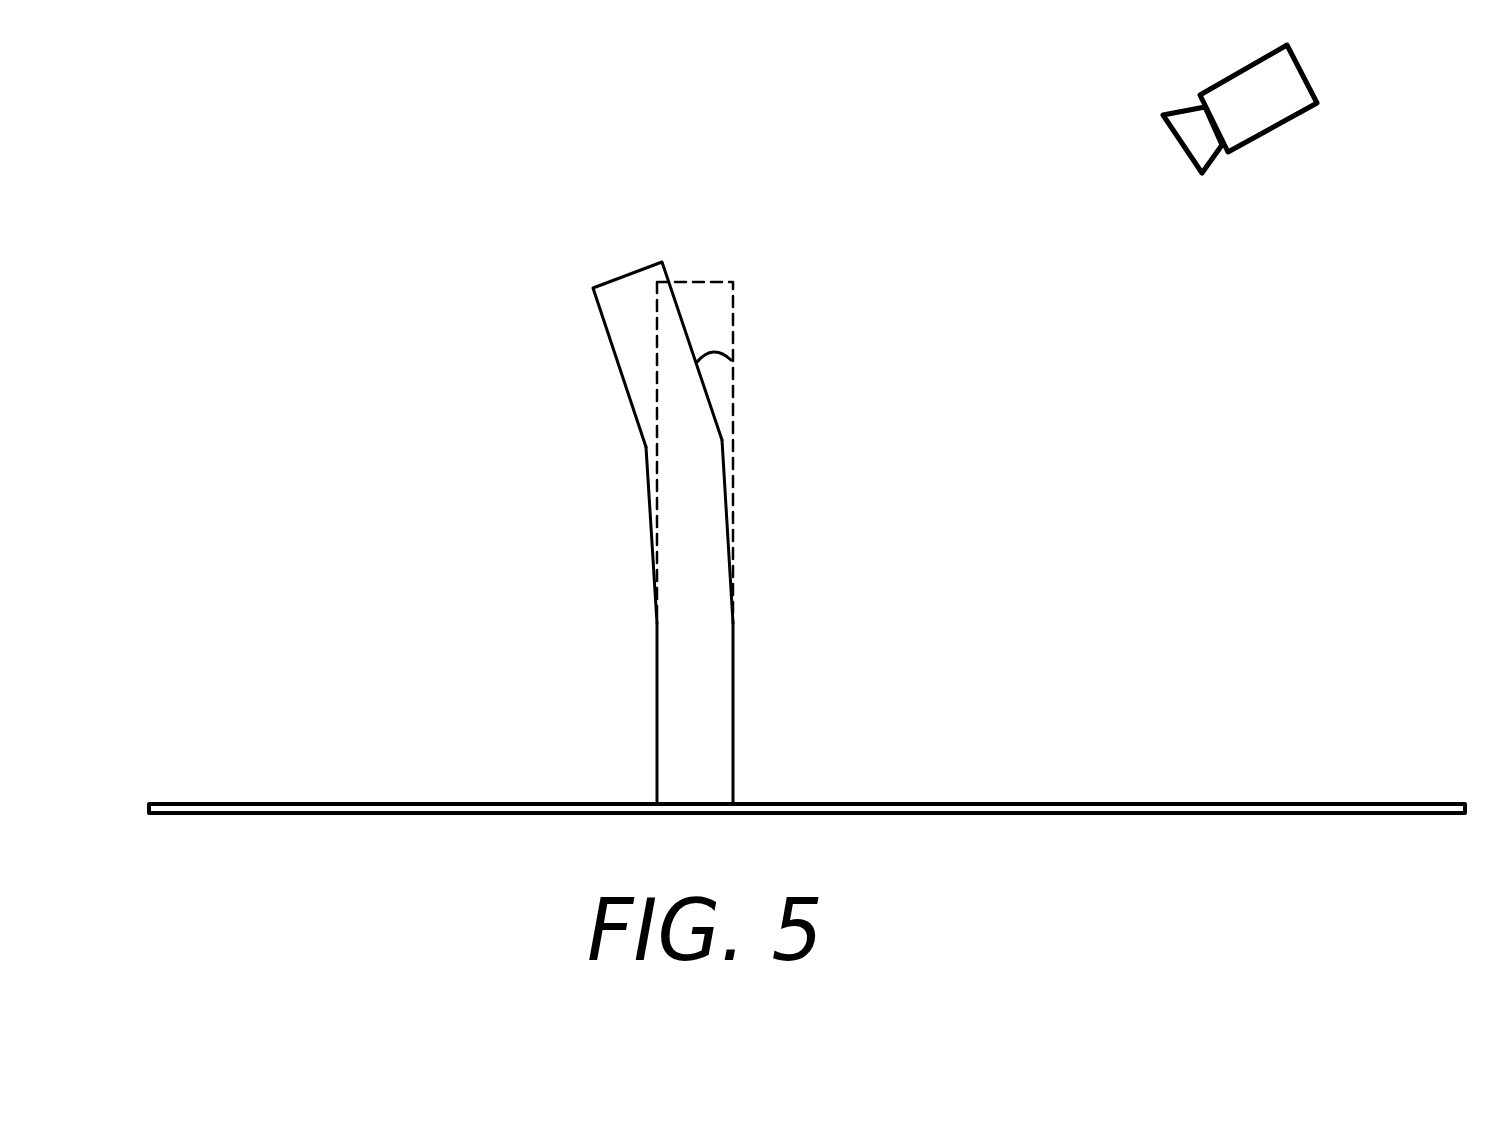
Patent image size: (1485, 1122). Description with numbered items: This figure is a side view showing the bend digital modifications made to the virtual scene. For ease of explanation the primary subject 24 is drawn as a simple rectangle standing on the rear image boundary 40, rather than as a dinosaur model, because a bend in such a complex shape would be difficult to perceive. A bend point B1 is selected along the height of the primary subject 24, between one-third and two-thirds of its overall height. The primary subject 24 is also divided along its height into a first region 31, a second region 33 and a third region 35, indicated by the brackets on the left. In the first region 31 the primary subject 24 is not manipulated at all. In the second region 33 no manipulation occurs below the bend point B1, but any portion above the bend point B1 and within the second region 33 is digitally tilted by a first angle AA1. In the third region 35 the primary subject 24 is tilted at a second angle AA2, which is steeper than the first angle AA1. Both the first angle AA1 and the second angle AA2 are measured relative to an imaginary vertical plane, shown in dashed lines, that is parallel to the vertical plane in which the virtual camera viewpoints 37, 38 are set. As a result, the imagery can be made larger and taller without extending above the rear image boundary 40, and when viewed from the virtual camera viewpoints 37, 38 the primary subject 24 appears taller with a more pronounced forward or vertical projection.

The primary subject 24 is at (600, 478).
The first region 31 is at (640, 632).
The second region 33 is at (632, 452).
The third region 35 is at (583, 297).
The virtual camera viewpoint 37 is at (1255, 157).
The virtual camera viewpoint 38 is at (1272, 133).
The rear image boundary 40 is at (143, 808).
The first angle AA1 is at (727, 455).
The second angle AA2 is at (730, 353).
The bend point B1 is at (732, 622).